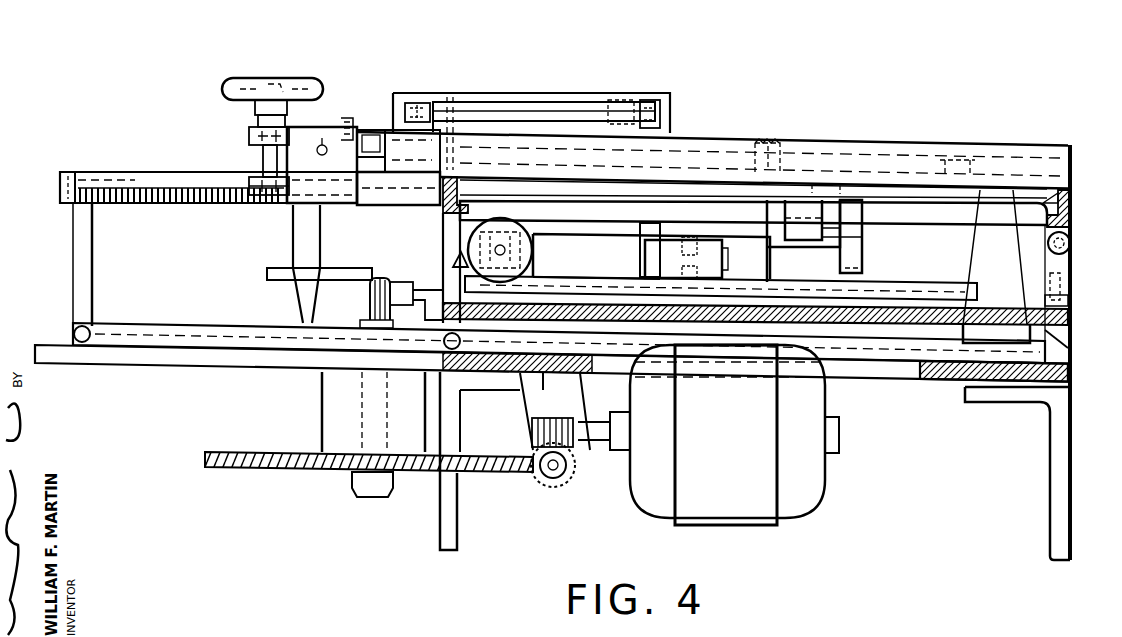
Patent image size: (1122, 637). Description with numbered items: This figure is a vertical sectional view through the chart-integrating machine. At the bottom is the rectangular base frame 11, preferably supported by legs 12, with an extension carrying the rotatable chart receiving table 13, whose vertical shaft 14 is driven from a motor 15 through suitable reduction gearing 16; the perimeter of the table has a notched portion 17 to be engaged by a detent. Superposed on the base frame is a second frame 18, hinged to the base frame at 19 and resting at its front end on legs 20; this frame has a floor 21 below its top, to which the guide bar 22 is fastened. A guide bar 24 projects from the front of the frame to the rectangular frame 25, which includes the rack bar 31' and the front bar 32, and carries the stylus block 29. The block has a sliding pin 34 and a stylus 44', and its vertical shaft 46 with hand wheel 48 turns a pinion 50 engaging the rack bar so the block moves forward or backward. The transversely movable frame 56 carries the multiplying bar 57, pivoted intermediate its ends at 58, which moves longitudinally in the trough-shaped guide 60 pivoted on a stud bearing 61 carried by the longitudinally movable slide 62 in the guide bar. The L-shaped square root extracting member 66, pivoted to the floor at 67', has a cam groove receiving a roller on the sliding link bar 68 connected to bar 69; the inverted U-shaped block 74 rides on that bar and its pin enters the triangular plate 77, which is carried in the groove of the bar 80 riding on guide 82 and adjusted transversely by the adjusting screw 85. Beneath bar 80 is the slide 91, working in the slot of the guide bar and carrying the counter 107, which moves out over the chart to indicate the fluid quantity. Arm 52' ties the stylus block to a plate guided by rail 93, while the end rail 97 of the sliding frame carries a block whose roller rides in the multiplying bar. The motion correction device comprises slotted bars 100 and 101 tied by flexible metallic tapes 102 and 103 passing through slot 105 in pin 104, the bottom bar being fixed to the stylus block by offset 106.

The rectangular base frame 11 is at (937, 384).
The legs 12 is at (1025, 393).
The rotatable chart receiving table 13 is at (235, 345).
The vertical shaft 14 is at (375, 327).
The motor 15 is at (646, 470).
The reduction gearing 16 is at (538, 484).
The notched portion 17 is at (143, 347).
The second frame 18 is at (1072, 220).
The hinge 19 is at (1073, 243).
The legs 20 is at (80, 286).
The floor 21 is at (1070, 337).
The guide bar 22 is at (1046, 292).
The guide bar 24 is at (375, 190).
The rectangular frame 25 is at (148, 172).
The stylus block 29 is at (348, 118).
The rack bar 31' is at (181, 219).
The front bar 32 is at (63, 178).
The sliding pin 34 is at (328, 127).
The stylus 44' is at (265, 264).
The vertical shaft 46 is at (265, 168).
The hand wheel 48 is at (250, 82).
The pinion 50 is at (265, 205).
The arm 52' is at (412, 167).
The transversely movable frame 56 is at (1052, 200).
The multiplying bar 57 is at (862, 238).
The pivot 58 is at (813, 184).
The trough-shaped guide 60 is at (848, 258).
The stud bearing 61 is at (866, 268).
The longitudinally movable slide 62 is at (950, 300).
The square root extracting member 66 is at (845, 307).
The pivot 67' is at (779, 313).
The sliding link bar 68 is at (792, 275).
The bar 69 is at (730, 278).
The inverted U-shaped block 74 is at (703, 255).
The triangular plate 77 is at (612, 240).
The grooved bar 80 is at (535, 258).
The guide 82 is at (290, 277).
The adjusting screw 85 is at (459, 260).
The slide 91 is at (445, 290).
The rail 93 is at (1000, 150).
The end rail 97 is at (905, 197).
The slotted bar 100 is at (550, 128).
The slotted bar 101 is at (522, 101).
The flexible metallic tape 102 is at (624, 118).
The flexible metallic tape 103 is at (613, 98).
The pin 104 is at (446, 98).
The slot 105 is at (452, 104).
The offset 106 is at (372, 130).
The counter 107 is at (372, 301).